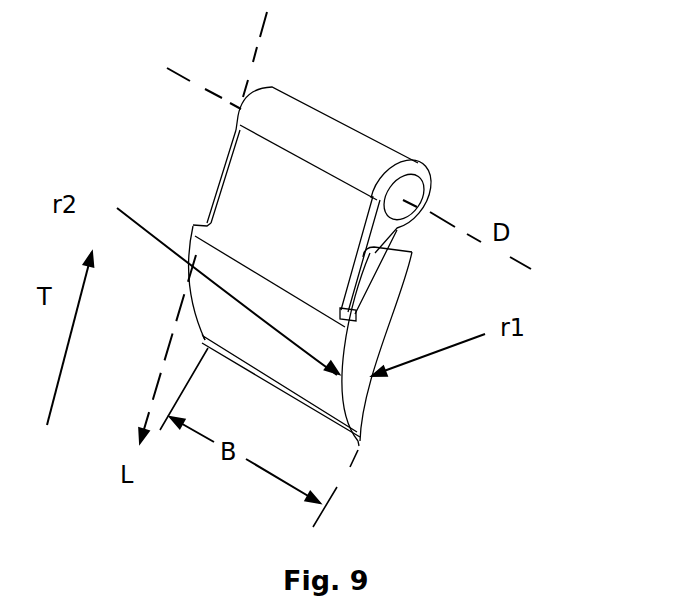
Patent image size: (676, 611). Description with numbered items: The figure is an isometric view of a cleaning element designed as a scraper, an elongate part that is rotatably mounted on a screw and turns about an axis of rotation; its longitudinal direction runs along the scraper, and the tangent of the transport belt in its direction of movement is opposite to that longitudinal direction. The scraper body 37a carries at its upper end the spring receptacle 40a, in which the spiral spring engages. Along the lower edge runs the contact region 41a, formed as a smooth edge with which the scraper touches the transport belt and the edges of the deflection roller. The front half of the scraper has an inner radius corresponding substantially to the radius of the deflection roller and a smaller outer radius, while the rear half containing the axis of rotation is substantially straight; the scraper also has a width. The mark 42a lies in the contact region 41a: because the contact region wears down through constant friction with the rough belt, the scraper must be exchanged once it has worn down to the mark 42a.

The contact plate body 37a is at (287, 182).
The retaining eyelet tab 40a is at (365, 283).
The contact region 41a is at (301, 418).
The mark 42a is at (358, 432).